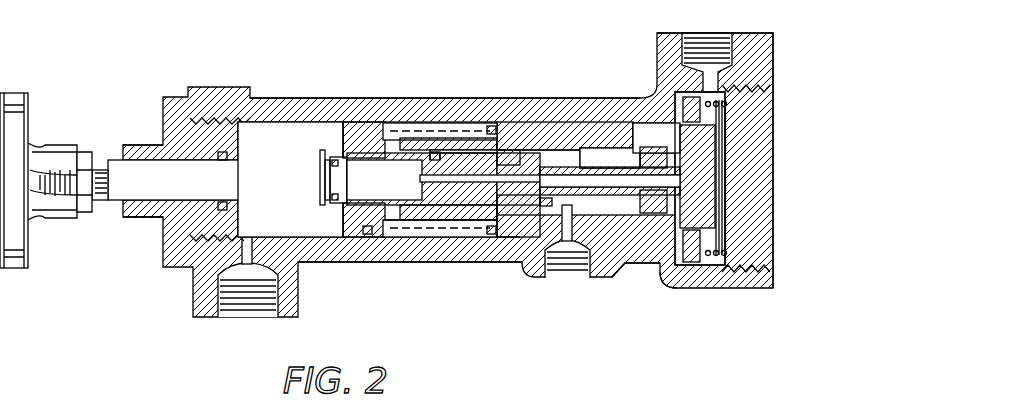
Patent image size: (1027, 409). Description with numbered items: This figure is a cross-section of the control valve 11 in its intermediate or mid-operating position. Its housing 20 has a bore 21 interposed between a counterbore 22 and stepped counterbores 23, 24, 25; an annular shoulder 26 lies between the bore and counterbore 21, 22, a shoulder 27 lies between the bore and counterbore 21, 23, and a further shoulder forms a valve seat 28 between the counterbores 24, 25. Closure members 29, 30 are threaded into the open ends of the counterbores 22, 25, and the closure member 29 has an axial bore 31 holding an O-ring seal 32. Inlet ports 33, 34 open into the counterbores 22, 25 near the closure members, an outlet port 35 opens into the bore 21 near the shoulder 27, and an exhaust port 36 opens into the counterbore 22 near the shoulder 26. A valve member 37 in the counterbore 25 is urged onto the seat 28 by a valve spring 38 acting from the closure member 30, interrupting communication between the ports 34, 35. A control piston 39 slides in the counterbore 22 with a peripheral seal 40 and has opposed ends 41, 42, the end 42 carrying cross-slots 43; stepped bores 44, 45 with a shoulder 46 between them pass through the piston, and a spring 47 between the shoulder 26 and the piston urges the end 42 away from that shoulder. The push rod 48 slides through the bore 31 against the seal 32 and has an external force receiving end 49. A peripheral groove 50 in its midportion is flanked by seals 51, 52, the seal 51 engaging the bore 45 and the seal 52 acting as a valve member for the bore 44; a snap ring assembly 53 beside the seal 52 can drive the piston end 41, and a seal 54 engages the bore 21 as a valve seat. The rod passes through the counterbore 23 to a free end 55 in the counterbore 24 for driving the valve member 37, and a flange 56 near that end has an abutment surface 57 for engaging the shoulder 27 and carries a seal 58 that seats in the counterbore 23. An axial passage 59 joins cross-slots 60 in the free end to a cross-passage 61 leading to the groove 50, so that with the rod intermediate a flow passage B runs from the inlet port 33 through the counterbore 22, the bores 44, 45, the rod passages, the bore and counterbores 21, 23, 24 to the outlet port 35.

The control valve 11 is at (192, 285).
The housing 20 is at (318, 292).
The bore 21 is at (540, 150).
The counterbore 22 is at (318, 103).
The stepped counterbore 23 is at (567, 259).
The stepped counterbore 24 is at (662, 270).
The stepped counterbore 25 is at (722, 275).
The annular shoulder 26 is at (518, 262).
The annular shoulder 27 is at (610, 158).
The valve seat 28 is at (682, 112).
The closure member 29 is at (238, 92).
The closure member 30 is at (775, 150).
The axial bore 31 is at (135, 162).
The O-ring seal 32 is at (222, 168).
The inlet port 33 is at (228, 300).
The inlet port 34 is at (712, 38).
The outlet port 35 is at (576, 278).
The exhaust port 36 is at (445, 118).
The valve member 37 is at (715, 128).
The valve spring 38 is at (726, 253).
The control piston 39 is at (445, 230).
The peripheral seal 40 is at (367, 237).
The abutment surface 41 is at (342, 135).
The abutment surface 42 is at (505, 135).
The cross-slots 43 is at (518, 220).
The stepped bore 44 is at (380, 158).
The stepped bore 45 is at (472, 188).
The abutment 46 is at (345, 222).
The spring 47 is at (492, 237).
The push rod 48 is at (115, 213).
The force receiving end 49 is at (62, 150).
The peripheral groove 50 is at (432, 226).
The peripheral seal 51 is at (430, 125).
The peripheral seal 52 is at (330, 178).
The snap ring and groove assembly 53 is at (320, 203).
The seal 54 is at (540, 198).
The free end 55 is at (715, 150).
The flange portion 56 is at (726, 225).
The abutment surface 57 is at (656, 145).
The seal 58 is at (656, 214).
The axial passage 59 is at (720, 180).
The cross-slots 60 is at (726, 200).
The cross-passage 61 is at (392, 125).
The pressure fluid flow passage B is at (246, 132).